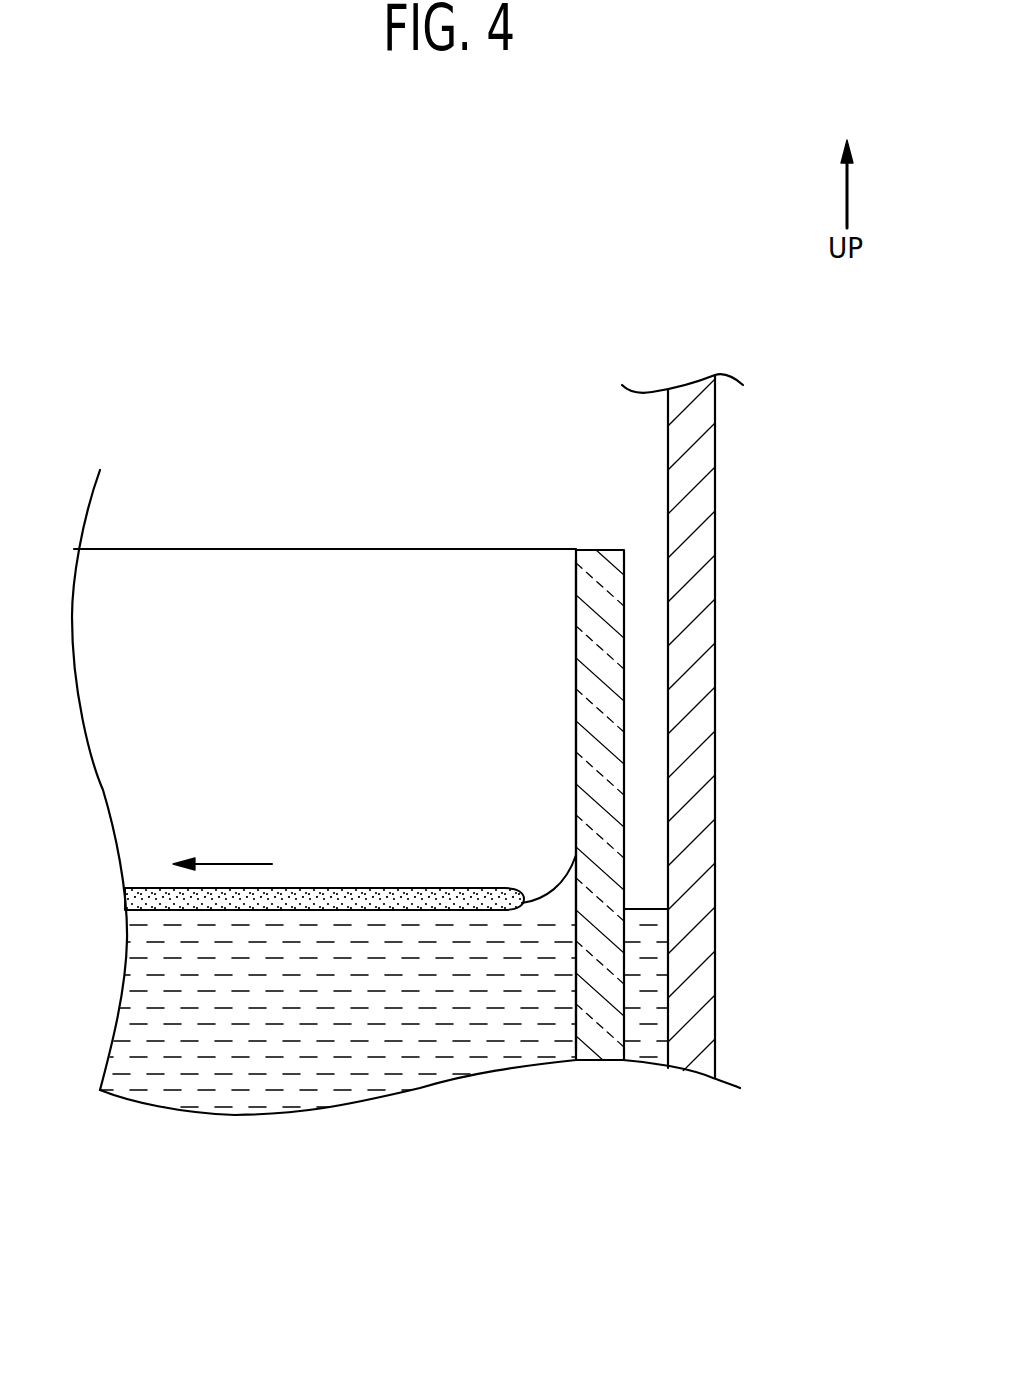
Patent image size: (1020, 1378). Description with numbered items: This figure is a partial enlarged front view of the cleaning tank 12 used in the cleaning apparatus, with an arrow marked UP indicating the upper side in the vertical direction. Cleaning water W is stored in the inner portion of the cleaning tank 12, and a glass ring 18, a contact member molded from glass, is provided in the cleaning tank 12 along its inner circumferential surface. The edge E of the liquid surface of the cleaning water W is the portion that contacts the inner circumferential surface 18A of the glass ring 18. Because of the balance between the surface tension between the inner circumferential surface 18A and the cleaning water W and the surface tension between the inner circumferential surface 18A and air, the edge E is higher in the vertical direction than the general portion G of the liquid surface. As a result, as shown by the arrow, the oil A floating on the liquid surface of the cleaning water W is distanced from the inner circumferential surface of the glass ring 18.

The cleaning tank 12 is at (716, 527).
The glass ring 18 is at (576, 590).
The inner circumferential surface of the glass ring 18A is at (576, 668).
The cleaning water W is at (390, 1048).
The general portion of the liquid surface G is at (317, 910).
The oil A is at (430, 905).
The edge of the liquid surface E is at (510, 873).